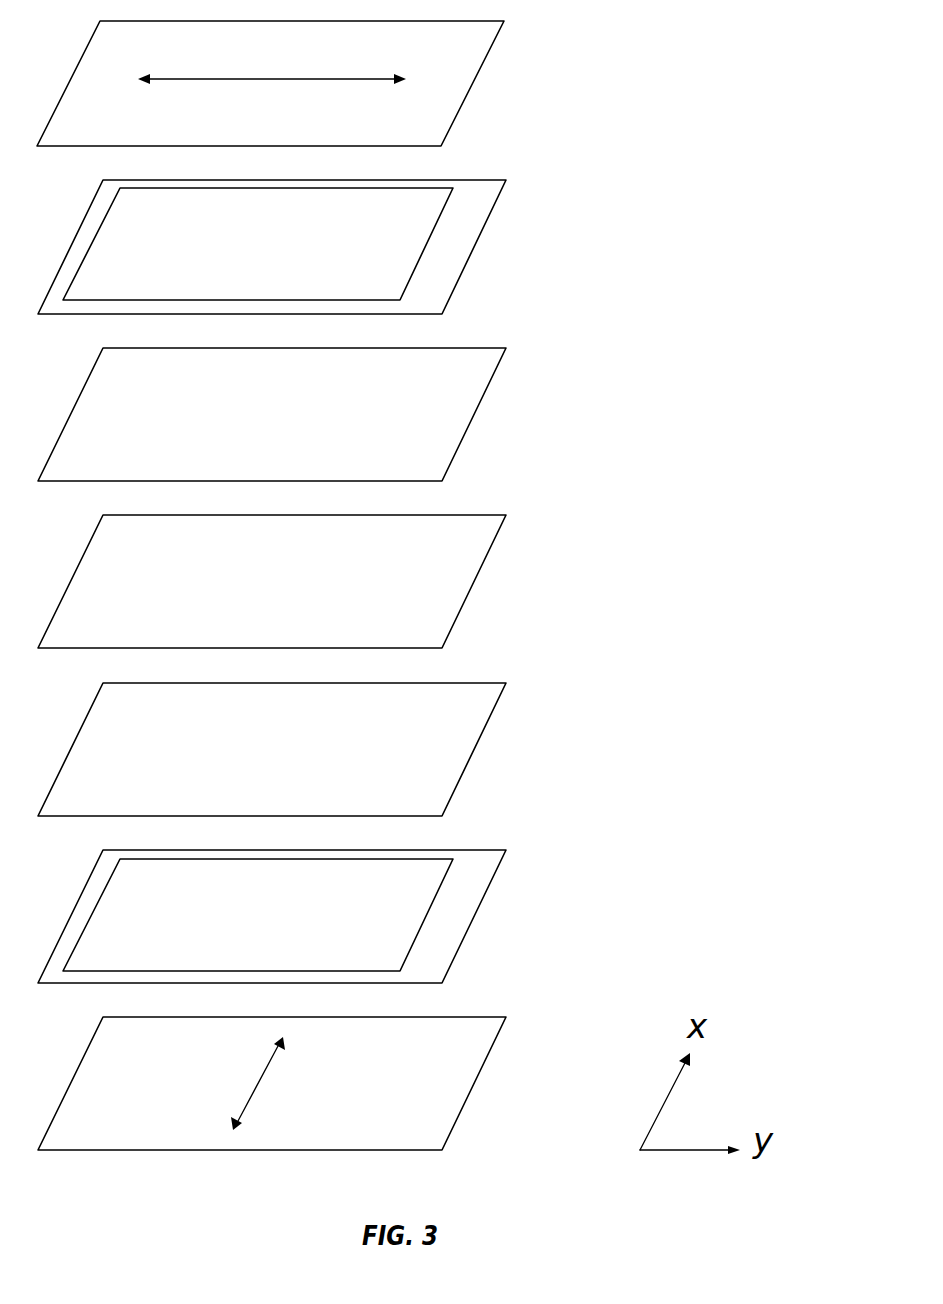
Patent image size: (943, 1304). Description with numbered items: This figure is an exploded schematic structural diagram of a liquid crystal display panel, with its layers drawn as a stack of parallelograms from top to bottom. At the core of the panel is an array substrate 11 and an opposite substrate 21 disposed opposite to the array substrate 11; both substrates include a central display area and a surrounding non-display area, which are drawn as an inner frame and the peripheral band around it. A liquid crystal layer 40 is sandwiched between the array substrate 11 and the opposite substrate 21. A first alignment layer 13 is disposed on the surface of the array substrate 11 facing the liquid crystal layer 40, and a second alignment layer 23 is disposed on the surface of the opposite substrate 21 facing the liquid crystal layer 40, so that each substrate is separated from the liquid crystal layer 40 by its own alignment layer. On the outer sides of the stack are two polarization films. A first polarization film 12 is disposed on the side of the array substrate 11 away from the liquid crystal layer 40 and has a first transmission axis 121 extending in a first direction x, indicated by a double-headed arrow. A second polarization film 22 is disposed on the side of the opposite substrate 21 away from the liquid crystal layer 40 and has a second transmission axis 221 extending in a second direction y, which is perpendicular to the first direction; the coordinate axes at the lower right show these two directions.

The second polarization film 22 is at (477, 77).
The second transmission axis 221 is at (333, 80).
The opposite substrate 21 is at (478, 244).
The second alignment layer 23 is at (478, 410).
The liquid crystal layer 40 is at (482, 568).
The first alignment layer 13 is at (478, 745).
The array substrate 11 is at (480, 907).
The first polarization film 12 is at (472, 1087).
The first transmission axis 121 is at (250, 1102).